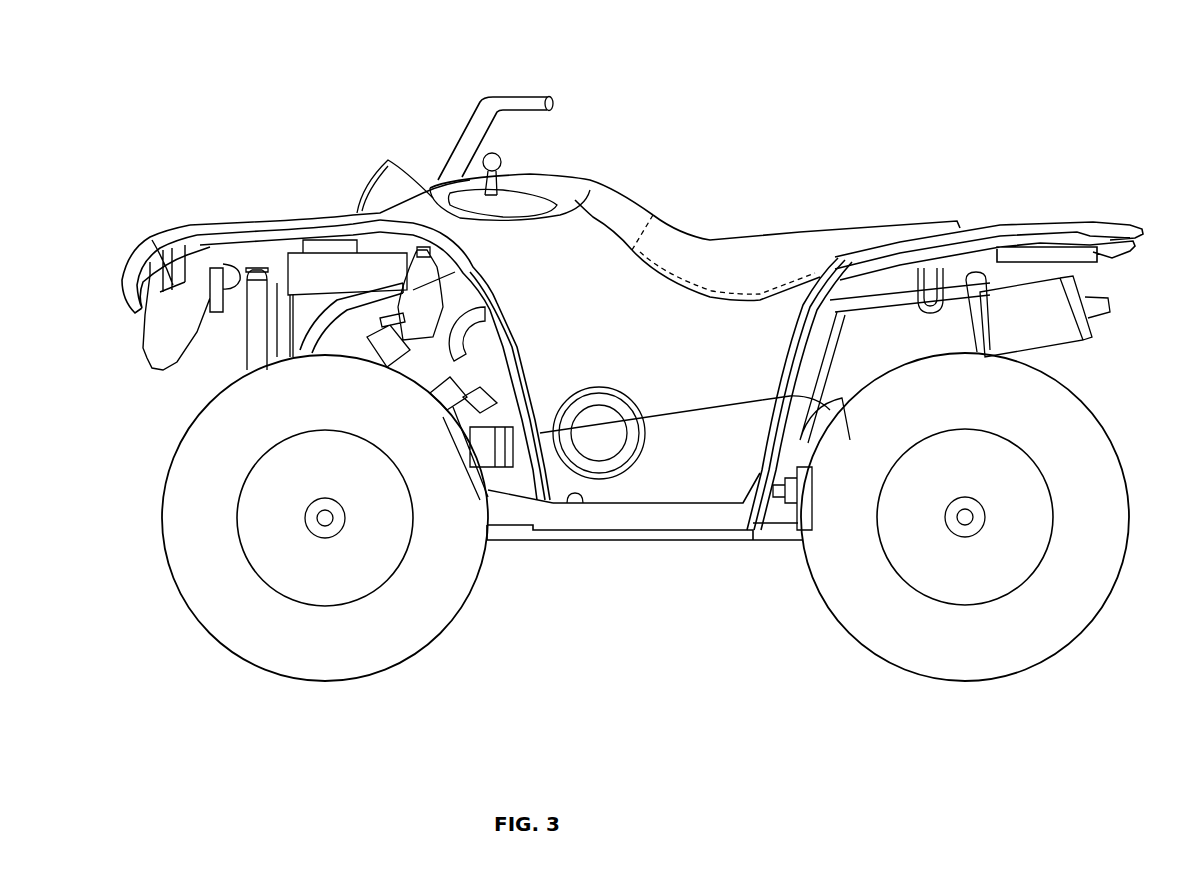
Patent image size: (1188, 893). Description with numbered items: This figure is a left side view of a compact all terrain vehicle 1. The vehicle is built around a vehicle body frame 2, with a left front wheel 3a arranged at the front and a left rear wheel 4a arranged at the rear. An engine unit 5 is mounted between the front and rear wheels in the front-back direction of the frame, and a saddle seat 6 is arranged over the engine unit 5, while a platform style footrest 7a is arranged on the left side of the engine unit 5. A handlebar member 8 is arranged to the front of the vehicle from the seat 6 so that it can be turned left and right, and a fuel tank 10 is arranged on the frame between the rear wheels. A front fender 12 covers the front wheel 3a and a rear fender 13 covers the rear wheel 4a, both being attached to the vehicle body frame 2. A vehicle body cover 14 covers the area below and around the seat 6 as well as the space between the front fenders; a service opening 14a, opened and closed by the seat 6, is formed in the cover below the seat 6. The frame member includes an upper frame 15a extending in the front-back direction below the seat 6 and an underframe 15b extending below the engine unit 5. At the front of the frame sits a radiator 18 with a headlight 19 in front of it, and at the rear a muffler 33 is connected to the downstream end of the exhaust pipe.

The compact all terrain vehicle 1 is at (290, 105).
The vehicle body frame 2 is at (712, 545).
The left front wheel 3a is at (160, 478).
The left rear wheel 4a is at (1118, 432).
The engine unit 5 is at (460, 374).
The saddle seat 6 is at (822, 230).
The left footrest 7a is at (575, 508).
The handlebar member 8 is at (535, 95).
The fuel tank 10 is at (963, 276).
The front fender 12 is at (282, 222).
The rear fender 13 is at (1000, 226).
The vehicle body cover 14 is at (622, 192).
The service opening 14a is at (660, 215).
The upper frame 15a is at (367, 295).
The underframe 15b is at (757, 540).
The radiator 18 is at (245, 325).
The headlight 19 is at (162, 265).
The muffler 33 is at (1085, 350).